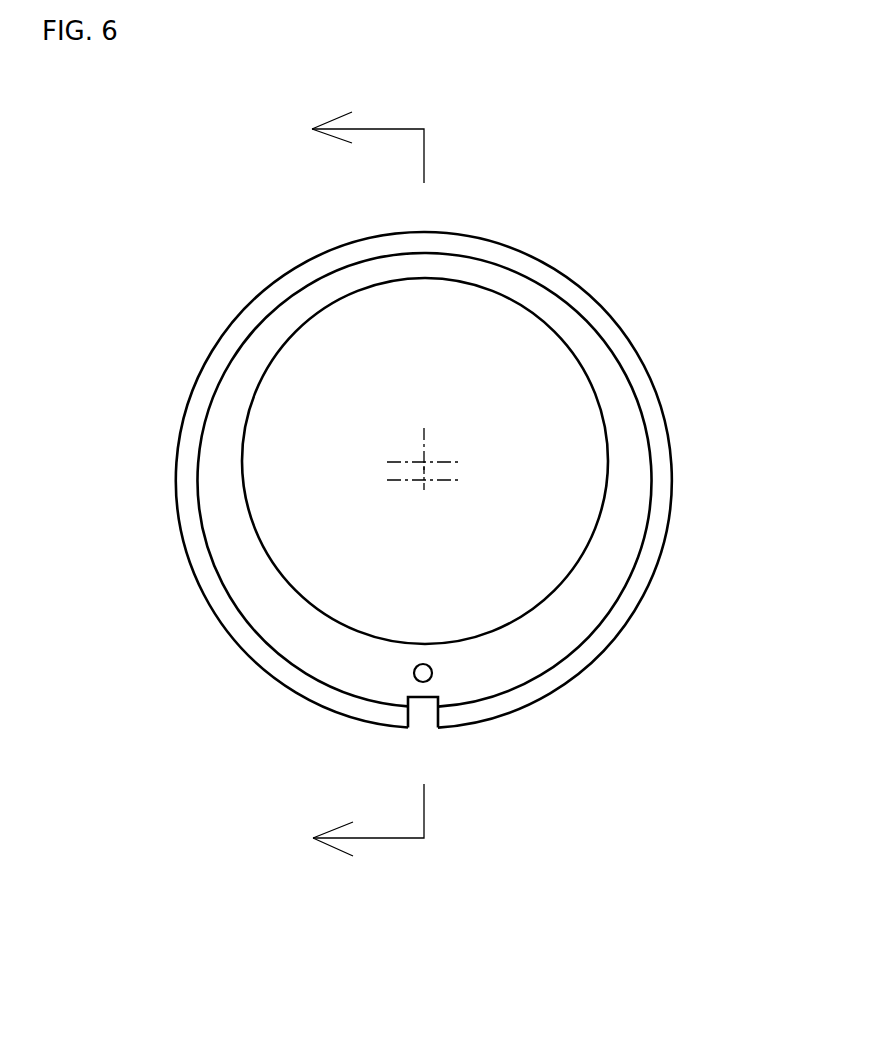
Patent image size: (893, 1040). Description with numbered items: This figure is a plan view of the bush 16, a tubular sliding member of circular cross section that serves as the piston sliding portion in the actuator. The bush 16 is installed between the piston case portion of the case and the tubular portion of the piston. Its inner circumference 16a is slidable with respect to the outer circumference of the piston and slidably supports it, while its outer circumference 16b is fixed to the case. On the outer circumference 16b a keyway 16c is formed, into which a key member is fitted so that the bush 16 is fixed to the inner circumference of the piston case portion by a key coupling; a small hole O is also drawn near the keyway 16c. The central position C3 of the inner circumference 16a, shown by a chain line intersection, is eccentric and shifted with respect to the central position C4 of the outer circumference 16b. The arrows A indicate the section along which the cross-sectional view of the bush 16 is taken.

The bush 16 is at (452, 436).
The inner circumference 16a is at (553, 566).
The outer circumference 16b is at (242, 618).
The keyway 16c is at (423, 699).
The central position of the inner circumference C3 is at (426, 460).
The central position of the outer circumference C4 is at (424, 480).
The hole O is at (423, 673).
The arrows A- A is at (386, 484).